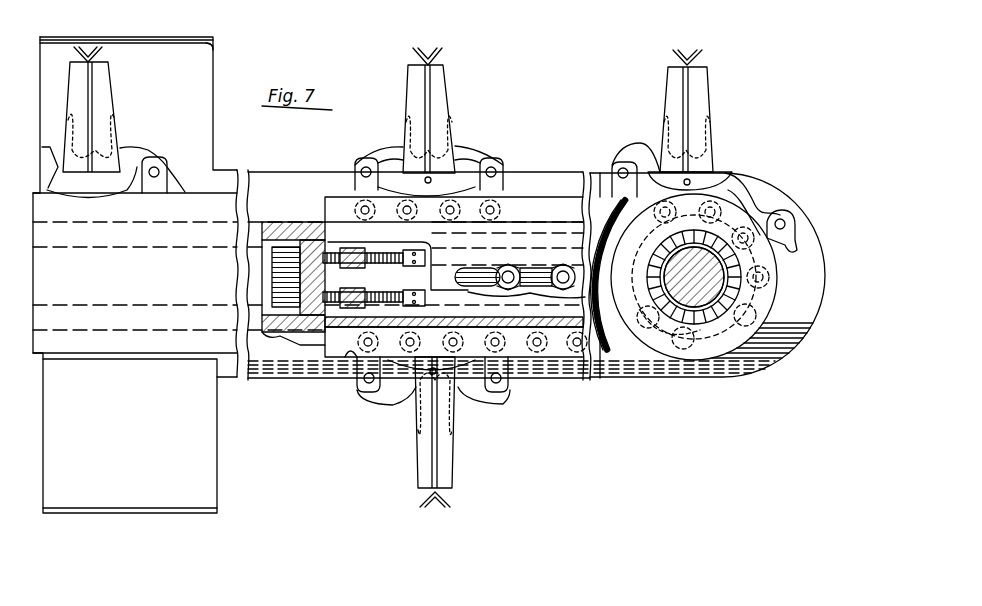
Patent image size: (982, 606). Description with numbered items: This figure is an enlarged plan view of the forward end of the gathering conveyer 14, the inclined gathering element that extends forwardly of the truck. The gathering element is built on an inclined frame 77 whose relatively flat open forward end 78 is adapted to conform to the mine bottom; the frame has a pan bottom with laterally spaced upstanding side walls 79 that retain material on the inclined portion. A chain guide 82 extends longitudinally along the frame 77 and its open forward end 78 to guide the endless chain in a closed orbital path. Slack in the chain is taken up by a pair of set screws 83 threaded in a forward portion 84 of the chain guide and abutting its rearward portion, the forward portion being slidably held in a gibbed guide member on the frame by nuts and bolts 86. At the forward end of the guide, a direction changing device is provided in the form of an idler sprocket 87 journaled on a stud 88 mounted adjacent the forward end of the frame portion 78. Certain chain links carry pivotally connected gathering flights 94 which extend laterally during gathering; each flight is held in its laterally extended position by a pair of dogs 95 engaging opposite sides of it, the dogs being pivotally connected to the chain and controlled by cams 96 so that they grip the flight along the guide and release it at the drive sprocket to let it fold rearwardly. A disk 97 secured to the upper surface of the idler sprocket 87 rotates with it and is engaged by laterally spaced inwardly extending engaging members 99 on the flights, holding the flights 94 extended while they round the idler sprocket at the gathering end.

The gathering conveyer 14 is at (124, 514).
The inclined frame 77 is at (168, 37).
The open forward end 78 is at (548, 172).
The side walls 79 is at (213, 50).
The chain guide 82 is at (146, 355).
The set screws 83 is at (414, 290).
The forward portion of chain guide 84 is at (561, 362).
The nuts and bolts 86 is at (514, 268).
The sprocket 87 is at (650, 342).
The stud 88 is at (707, 283).
The gathering flights 94 is at (105, 92).
The dogs 95 is at (133, 148).
The cams 96 is at (184, 195).
The disk 97 is at (663, 358).
The engaging members 99 is at (640, 168).